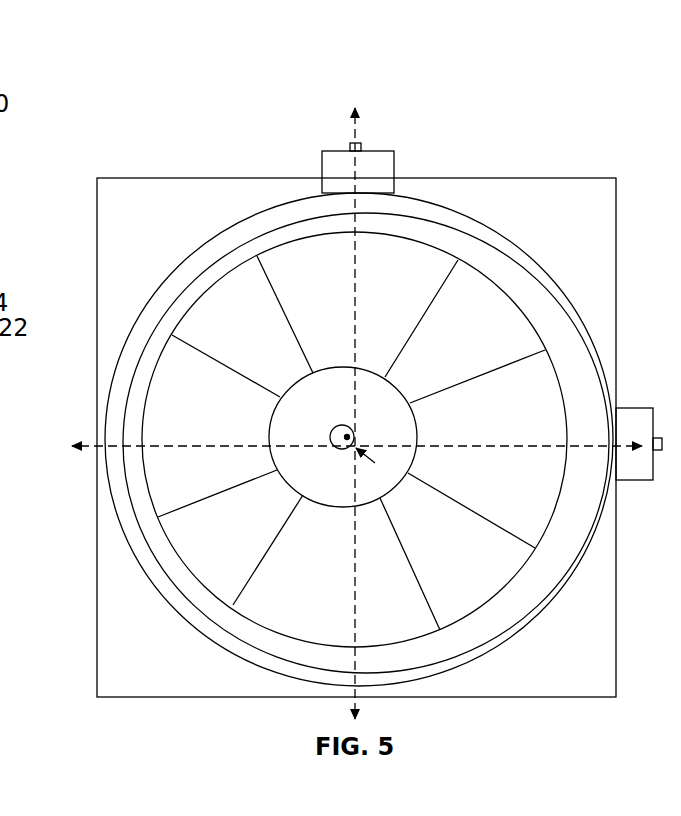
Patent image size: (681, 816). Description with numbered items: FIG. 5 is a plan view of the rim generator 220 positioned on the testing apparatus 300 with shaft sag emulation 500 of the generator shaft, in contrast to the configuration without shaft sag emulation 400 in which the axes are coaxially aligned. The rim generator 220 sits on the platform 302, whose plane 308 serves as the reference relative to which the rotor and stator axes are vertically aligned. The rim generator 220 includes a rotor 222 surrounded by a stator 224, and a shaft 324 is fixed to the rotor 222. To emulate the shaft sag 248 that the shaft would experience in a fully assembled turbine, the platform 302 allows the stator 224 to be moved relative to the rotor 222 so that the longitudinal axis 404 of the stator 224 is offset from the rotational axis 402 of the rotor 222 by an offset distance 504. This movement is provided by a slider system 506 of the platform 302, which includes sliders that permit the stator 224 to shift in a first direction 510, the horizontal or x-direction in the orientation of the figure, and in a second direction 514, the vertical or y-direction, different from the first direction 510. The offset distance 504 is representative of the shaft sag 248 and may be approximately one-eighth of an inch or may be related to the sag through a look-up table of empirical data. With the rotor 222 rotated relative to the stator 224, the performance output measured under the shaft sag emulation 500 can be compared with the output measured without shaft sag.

The testing apparatus 300 is at (528, 100).
The shaft sag emulation 500 is at (550, 163).
The rim generator 220 is at (201, 167).
The plane 308 is at (293, 178).
The second direction 514 is at (350, 265).
The slider system 506 is at (375, 151).
The offset distance 504 is at (320, 422).
The rotational axis 402 is at (338, 437).
The longitudinal axis 404 is at (357, 443).
The shaft sag 248 is at (330, 454).
The shaft 324 is at (340, 451).
The first direction 510 is at (182, 447).
The platform 302 is at (170, 582).
The rotor 222 is at (210, 595).
The stator 224 is at (235, 637).
The shaft sag emulation 400 is at (22, 216).